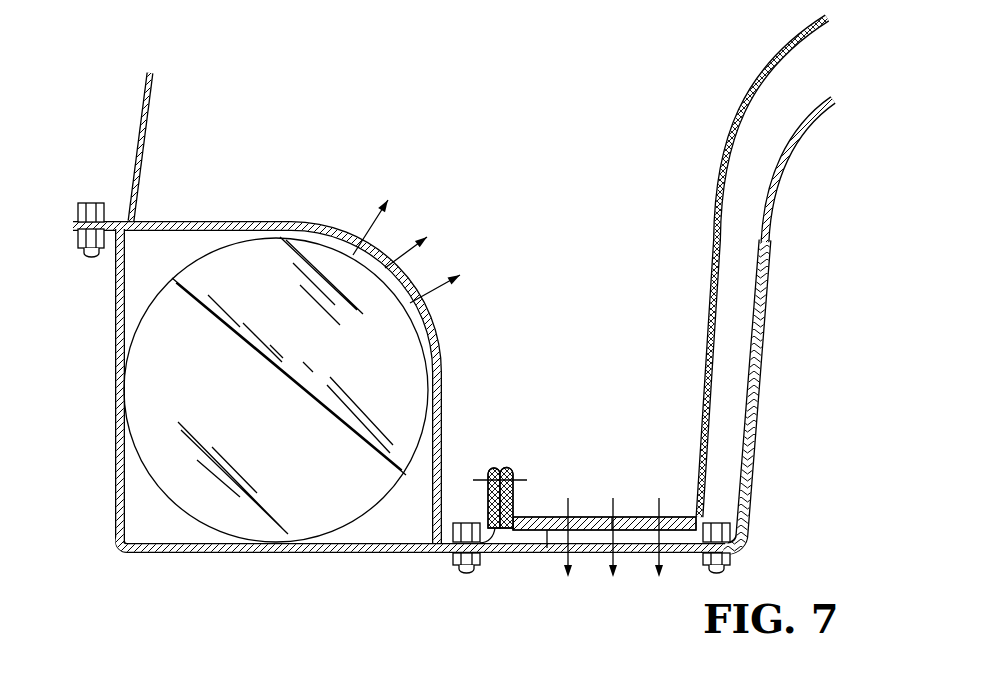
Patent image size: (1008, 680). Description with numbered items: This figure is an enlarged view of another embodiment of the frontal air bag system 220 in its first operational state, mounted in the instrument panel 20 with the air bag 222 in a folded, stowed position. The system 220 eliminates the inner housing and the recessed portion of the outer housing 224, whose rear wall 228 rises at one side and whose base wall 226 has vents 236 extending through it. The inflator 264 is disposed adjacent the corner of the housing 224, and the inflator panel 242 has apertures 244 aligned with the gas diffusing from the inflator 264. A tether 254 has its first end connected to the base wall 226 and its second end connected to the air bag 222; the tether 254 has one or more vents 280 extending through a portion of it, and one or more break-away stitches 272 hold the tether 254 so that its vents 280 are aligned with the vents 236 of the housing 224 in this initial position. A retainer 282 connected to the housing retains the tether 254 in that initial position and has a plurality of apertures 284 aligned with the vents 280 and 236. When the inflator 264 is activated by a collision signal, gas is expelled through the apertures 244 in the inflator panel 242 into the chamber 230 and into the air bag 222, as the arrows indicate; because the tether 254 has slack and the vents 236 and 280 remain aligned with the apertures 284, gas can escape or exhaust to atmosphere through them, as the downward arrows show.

The instrument panel 20 is at (100, 127).
The frontal air bag system 220 is at (472, 375).
The air bag 222 is at (800, 140).
The outer housing 224 is at (115, 472).
The base wall 226 is at (393, 553).
The rear wall 228 is at (773, 278).
The chamber 230 is at (663, 437).
The vents 236 is at (655, 555).
The inflator panel 242 is at (440, 403).
The apertures 244 is at (413, 290).
The tether 254 is at (710, 283).
The inflator 264 is at (263, 252).
The break-away stitches 272 is at (483, 478).
The vents 280 is at (547, 528).
The retainer 282 is at (536, 517).
The apertures 284 is at (612, 516).